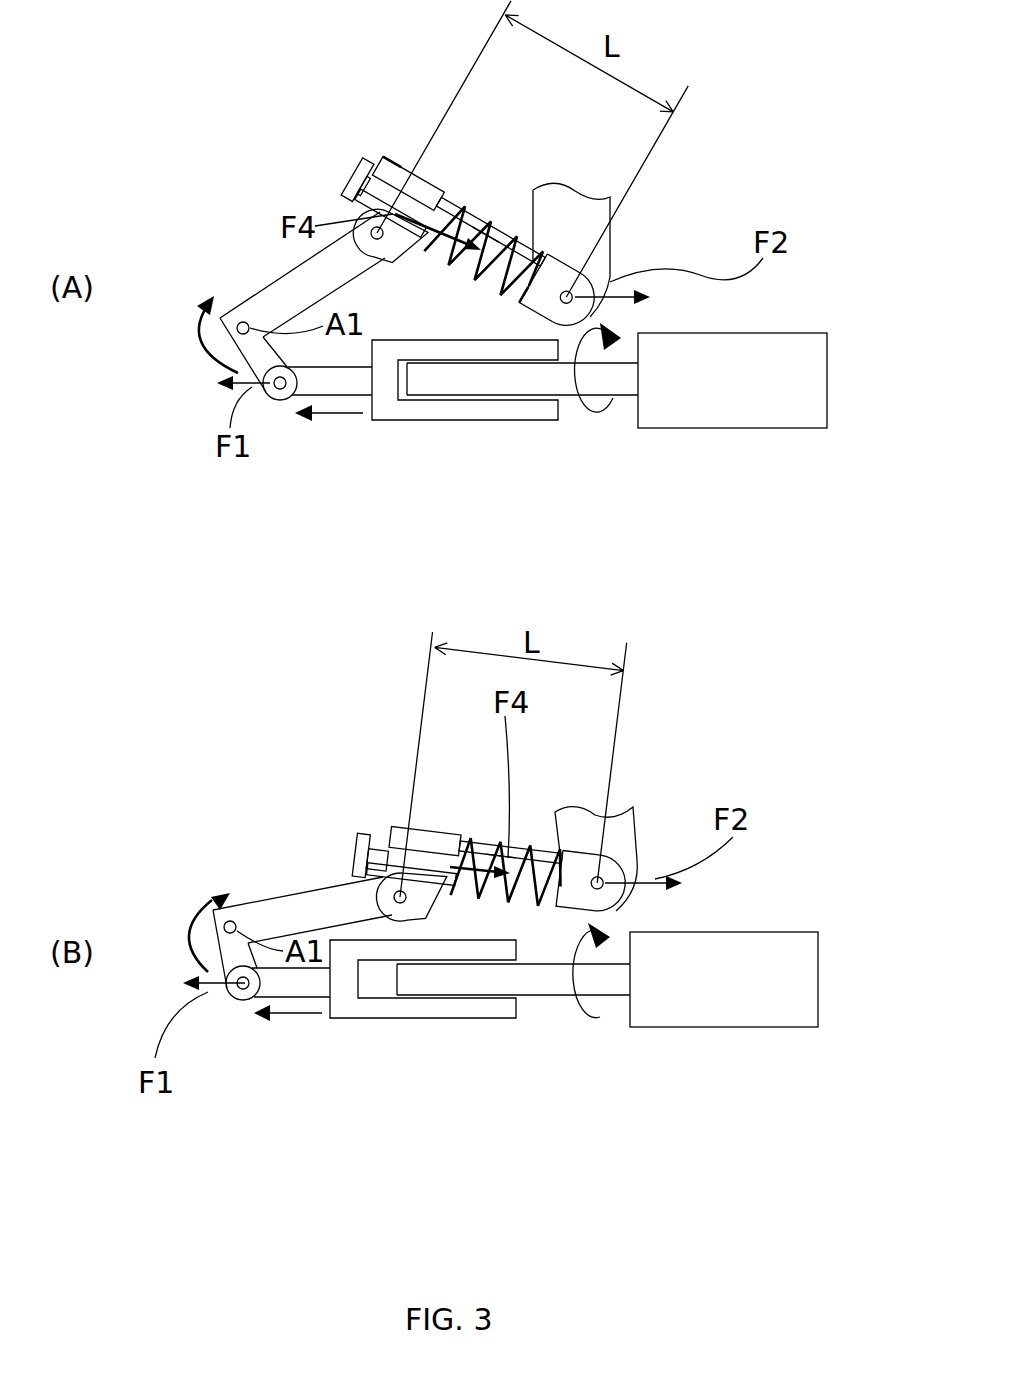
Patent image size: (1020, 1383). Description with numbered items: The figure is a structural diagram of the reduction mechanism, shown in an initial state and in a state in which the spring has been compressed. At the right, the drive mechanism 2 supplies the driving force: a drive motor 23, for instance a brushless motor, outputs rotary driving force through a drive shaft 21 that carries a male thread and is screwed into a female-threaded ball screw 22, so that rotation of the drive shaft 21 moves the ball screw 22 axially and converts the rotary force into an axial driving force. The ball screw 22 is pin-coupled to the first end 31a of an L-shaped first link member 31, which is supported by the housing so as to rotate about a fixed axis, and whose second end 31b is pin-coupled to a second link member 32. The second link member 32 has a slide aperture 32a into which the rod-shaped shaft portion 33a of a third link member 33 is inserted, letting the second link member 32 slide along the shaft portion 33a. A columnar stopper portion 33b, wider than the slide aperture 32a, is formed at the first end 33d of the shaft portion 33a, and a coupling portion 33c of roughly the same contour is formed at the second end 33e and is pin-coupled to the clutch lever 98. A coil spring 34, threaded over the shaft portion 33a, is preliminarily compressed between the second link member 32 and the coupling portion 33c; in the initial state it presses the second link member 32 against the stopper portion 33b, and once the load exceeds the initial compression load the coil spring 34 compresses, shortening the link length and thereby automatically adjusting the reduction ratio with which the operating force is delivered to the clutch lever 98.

The drive mechanism 2 is at (539, 753).
The drive shaft 21 is at (575, 396).
The ball screw 22 is at (458, 421).
The drive motor 23 is at (700, 428).
The first link member 31 is at (290, 293).
The first end 31a is at (262, 390).
The second end 31b is at (353, 214).
The second link member 32 is at (402, 168).
The slide aperture 32a is at (428, 190).
The third link member 33 is at (567, 529).
The shaft portion 33a is at (495, 205).
The stopper portion 33b is at (365, 162).
The coupling portion 33c is at (607, 290).
The first end 33d is at (385, 160).
The second end 33e is at (517, 300).
The coil spring 34 is at (512, 237).
The clutch lever 98 is at (565, 193).